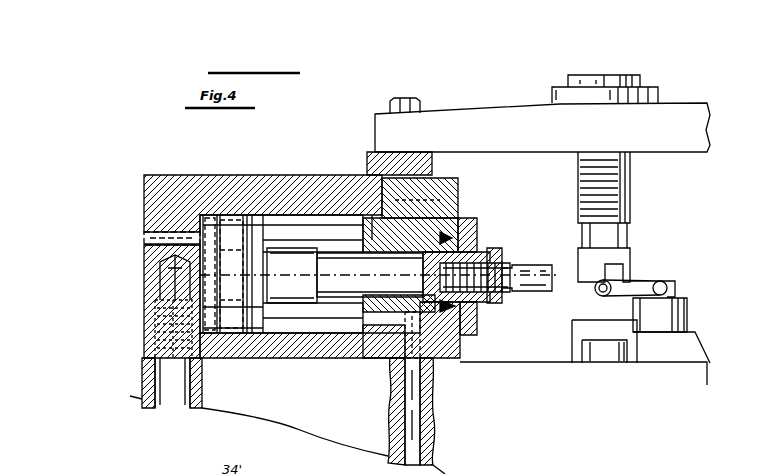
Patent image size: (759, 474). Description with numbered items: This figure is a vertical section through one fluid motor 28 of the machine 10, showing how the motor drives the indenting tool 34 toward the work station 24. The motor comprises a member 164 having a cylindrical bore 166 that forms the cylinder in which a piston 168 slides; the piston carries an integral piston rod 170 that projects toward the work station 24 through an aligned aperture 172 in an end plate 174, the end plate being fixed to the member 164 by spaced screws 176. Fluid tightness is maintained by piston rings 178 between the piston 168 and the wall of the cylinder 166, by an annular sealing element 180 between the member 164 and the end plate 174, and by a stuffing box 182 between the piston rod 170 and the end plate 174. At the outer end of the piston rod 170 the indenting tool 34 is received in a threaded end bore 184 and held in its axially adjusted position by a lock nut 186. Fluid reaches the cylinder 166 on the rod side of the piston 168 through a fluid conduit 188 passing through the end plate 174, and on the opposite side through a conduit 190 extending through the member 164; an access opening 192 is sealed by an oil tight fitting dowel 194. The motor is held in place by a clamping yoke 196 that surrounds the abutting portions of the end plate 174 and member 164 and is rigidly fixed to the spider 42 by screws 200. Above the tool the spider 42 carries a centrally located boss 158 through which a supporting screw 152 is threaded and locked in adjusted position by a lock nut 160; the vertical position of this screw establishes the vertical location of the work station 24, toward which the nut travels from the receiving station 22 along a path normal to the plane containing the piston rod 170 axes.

The apparatus 10 is at (640, 283).
The receiving station 22 is at (566, 338).
The work station 24 is at (636, 264).
The fluid motor 28 is at (303, 177).
The indenting tool 34 is at (530, 265).
The spider 42 is at (686, 145).
The supporting screw 152 is at (634, 192).
The boss 158 is at (655, 95).
The lock nut 160 is at (616, 92).
The member 164 is at (232, 177).
The cylindrical bore 166 is at (282, 355).
The piston 168 is at (230, 355).
The piston rod 170 is at (302, 250).
The aperture 172 is at (402, 254).
The end plate 174 is at (396, 358).
The screws 176 is at (462, 188).
The piston rings 178 is at (230, 213).
The annular sealing element 180 is at (360, 216).
The stuffing box 182 is at (440, 238).
The threaded end bore 184 is at (480, 305).
The lock nut 186 is at (488, 248).
The fluid conduit 188 is at (422, 392).
The conduit 190 is at (154, 392).
The slot 192 is at (146, 237).
The dowel 194 is at (146, 246).
The clamping yoke 196 is at (370, 154).
The screws 200 is at (424, 101).